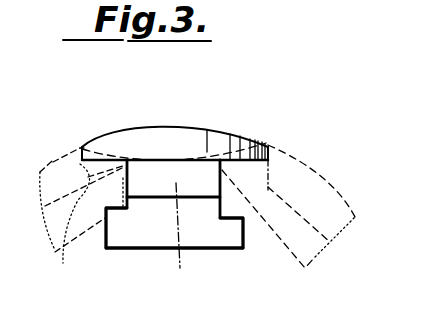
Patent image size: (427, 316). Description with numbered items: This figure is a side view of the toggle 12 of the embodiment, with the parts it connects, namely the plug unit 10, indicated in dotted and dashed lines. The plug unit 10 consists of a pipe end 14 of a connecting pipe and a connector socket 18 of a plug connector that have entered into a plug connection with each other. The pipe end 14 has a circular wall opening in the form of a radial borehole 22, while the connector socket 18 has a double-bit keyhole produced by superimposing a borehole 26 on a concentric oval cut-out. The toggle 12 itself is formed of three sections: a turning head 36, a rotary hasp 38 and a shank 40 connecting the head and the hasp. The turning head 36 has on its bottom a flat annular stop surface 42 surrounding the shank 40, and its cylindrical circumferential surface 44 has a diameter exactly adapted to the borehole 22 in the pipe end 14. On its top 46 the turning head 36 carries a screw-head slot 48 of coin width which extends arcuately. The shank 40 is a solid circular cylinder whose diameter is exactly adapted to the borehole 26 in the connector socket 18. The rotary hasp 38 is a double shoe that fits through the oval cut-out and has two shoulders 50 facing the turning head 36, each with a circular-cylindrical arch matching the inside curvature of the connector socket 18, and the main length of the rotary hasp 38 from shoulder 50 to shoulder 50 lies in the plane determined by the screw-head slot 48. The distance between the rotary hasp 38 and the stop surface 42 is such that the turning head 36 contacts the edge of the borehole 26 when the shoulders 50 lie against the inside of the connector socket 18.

The plug unit 10 is at (413, 152).
The toggle 12 is at (150, 123).
The pipe end 14 is at (53, 162).
The connector socket 18 is at (315, 258).
The borehole 22 is at (55, 250).
The borehole 26 is at (103, 177).
The turning head 36 is at (207, 129).
The rotary hasp 38 is at (208, 250).
The shank 40 is at (180, 234).
The stop surface 42 is at (254, 152).
The cylindrical circumferential surface 44 is at (81, 149).
The top 46 is at (122, 128).
The screw-head slot 48 is at (165, 153).
The shoulders 50 is at (110, 212).